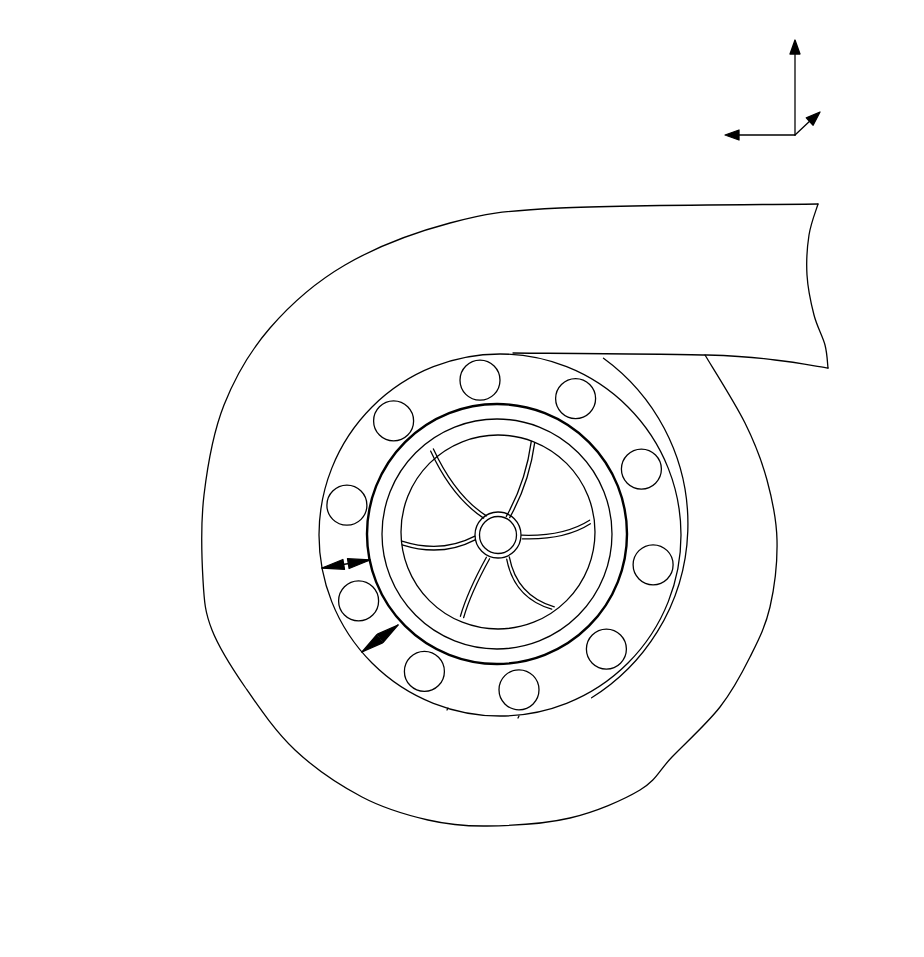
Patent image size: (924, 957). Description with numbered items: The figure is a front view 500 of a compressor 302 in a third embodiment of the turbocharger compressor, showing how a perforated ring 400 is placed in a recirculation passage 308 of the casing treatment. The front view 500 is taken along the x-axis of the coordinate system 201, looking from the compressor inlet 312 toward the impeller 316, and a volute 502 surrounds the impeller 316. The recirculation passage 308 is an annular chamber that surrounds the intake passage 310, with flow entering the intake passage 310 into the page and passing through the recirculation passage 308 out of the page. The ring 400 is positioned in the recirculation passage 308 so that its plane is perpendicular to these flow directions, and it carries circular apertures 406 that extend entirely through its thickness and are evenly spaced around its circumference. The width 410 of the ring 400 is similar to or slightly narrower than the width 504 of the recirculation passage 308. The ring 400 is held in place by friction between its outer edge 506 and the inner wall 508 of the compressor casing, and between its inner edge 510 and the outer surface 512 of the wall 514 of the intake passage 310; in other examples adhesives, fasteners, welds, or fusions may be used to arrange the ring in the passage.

The front view 500 is at (172, 156).
The coordinate system 201 is at (752, 96).
The compressor 302 is at (284, 246).
The volute 502 is at (276, 366).
The compressor inlet 312 is at (800, 420).
The recirculation passage 308 is at (678, 414).
The ring 400 is at (647, 613).
The apertures 406 is at (610, 663).
The intake passage 310 is at (598, 538).
The inner edge 510 is at (550, 664).
The wall 514 is at (550, 420).
The outer surface 512 is at (549, 660).
The impeller 316 is at (479, 480).
The outer edge 506 is at (518, 718).
The inner wall 508 is at (447, 710).
The width of the recirculation passage 504 is at (345, 553).
The width of the ring 410 is at (350, 620).